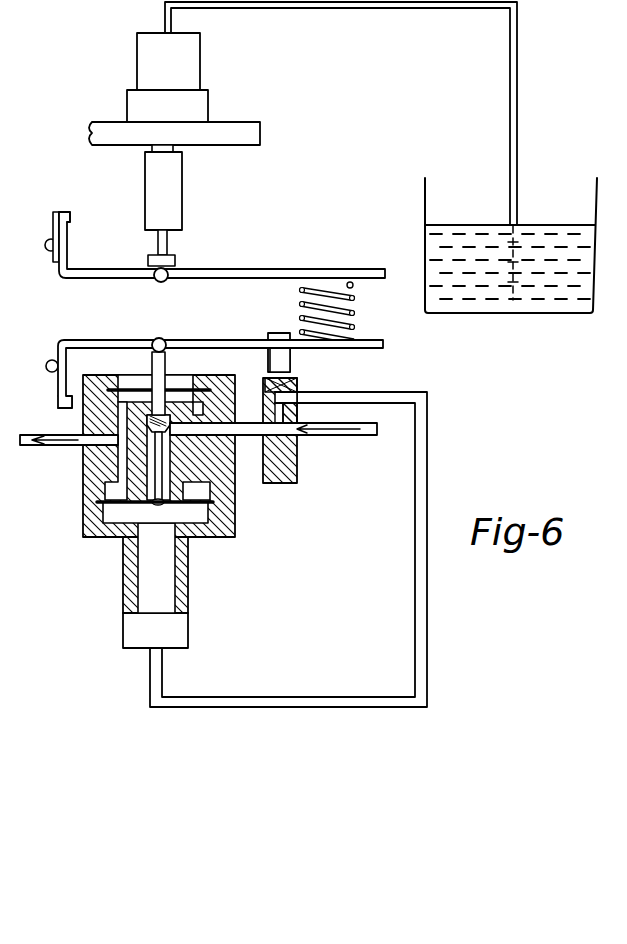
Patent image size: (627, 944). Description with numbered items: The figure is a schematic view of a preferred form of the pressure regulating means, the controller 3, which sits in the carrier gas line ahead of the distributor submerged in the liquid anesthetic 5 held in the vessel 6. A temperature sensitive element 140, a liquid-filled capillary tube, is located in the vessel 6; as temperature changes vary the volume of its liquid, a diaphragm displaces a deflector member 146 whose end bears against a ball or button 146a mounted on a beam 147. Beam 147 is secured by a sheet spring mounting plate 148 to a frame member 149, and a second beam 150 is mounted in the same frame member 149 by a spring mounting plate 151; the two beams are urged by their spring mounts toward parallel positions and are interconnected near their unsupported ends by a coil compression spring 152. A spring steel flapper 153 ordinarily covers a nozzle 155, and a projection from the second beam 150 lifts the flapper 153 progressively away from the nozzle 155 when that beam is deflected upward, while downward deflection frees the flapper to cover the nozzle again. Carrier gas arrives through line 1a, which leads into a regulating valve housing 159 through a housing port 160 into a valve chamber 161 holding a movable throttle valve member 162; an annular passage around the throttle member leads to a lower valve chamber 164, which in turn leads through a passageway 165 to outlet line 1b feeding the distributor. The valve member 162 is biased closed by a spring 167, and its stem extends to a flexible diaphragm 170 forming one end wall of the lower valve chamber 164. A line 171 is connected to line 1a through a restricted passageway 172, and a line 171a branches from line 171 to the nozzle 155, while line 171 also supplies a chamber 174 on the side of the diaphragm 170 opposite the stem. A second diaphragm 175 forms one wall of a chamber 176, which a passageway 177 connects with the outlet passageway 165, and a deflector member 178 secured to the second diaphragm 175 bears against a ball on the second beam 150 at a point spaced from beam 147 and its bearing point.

The line 1a is at (330, 442).
The outlet line 1b is at (50, 450).
The controller 3 is at (251, 554).
The liquid anesthetic 5 is at (564, 305).
The vessel 6 is at (425, 200).
The temperature sensitive element 140 is at (372, 5).
The deflector member 146 is at (182, 205).
The ball or button 146a is at (172, 270).
The beam 147 is at (300, 270).
The sheet spring mounting plate 148 is at (53, 242).
The frame member 149 is at (76, 210).
The second beam 150 is at (385, 348).
The spring mounting plate 151 is at (50, 372).
The coil compression spring 152 is at (355, 322).
The flapper 153 is at (268, 356).
The nozzle 155 is at (290, 362).
The regulating valve housing 159 is at (245, 438).
The housing port 160 is at (272, 408).
The valve chamber 161 is at (267, 386).
The movable throttle valve member 162 is at (160, 467).
The lower valve chamber 164 is at (110, 493).
The passageway 165 is at (120, 462).
The spring 167 is at (188, 393).
The flexible diaphragm 170 is at (196, 543).
The line 171 is at (408, 394).
The line 171a is at (300, 392).
The restricted passageway 172 is at (288, 412).
The chamber 174 is at (148, 580).
The second diaphragm 175 is at (108, 361).
The chamber 176 is at (162, 386).
The passageway 177 is at (112, 412).
The deflector member 178 is at (156, 345).